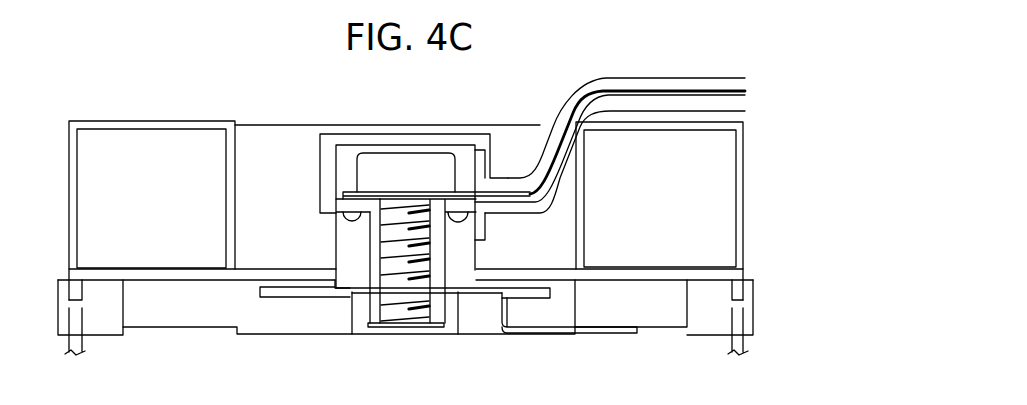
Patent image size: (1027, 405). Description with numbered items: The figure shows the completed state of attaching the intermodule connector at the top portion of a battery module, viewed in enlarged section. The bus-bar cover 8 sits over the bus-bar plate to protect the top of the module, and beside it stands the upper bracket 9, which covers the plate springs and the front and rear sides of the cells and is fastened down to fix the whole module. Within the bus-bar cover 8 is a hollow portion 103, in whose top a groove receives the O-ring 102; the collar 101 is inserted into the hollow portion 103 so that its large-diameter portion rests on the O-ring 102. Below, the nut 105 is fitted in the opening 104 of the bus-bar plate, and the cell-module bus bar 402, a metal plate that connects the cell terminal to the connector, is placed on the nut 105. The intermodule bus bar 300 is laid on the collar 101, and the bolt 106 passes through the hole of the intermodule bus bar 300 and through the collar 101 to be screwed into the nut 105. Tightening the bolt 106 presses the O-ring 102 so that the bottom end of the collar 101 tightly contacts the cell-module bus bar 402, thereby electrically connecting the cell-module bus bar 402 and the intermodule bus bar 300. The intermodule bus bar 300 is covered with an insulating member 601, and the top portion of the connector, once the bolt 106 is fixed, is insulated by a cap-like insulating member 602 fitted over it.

The bus-bar cover 8 is at (747, 273).
The upper bracket 9 is at (745, 195).
The collar 101 is at (350, 240).
The O-ring 102 is at (458, 222).
The hollow portion 103 is at (377, 262).
The opening 104 is at (378, 320).
The nut 105 is at (437, 320).
The bolt 106 is at (402, 153).
The intermodule bus bar 300 is at (614, 90).
The cell-module bus bar 402 is at (603, 329).
The insulating member 601 is at (678, 78).
The cap-like insulating member 602 is at (351, 134).